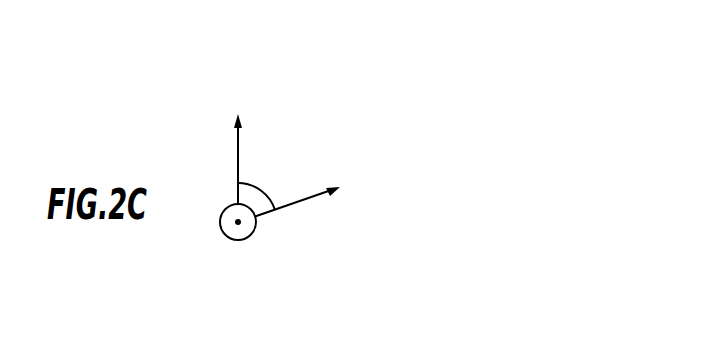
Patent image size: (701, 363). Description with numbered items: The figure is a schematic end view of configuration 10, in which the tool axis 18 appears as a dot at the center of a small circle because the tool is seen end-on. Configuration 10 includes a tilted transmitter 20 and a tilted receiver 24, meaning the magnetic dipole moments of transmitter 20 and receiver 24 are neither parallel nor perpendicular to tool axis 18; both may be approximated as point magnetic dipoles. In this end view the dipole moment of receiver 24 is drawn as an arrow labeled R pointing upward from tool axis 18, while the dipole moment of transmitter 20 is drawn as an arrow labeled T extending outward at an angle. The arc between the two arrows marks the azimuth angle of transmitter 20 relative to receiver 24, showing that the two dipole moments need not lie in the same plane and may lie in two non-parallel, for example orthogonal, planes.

The configuration 10 is at (353, 143).
The tool axis 18 is at (236, 240).
The tilted transmitter 20 is at (309, 204).
The tilted receiver 24 is at (243, 161).